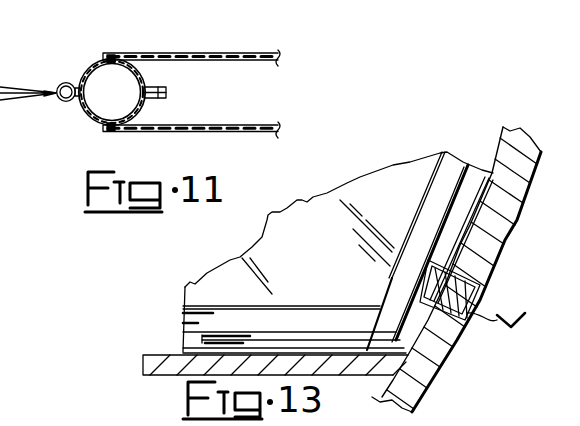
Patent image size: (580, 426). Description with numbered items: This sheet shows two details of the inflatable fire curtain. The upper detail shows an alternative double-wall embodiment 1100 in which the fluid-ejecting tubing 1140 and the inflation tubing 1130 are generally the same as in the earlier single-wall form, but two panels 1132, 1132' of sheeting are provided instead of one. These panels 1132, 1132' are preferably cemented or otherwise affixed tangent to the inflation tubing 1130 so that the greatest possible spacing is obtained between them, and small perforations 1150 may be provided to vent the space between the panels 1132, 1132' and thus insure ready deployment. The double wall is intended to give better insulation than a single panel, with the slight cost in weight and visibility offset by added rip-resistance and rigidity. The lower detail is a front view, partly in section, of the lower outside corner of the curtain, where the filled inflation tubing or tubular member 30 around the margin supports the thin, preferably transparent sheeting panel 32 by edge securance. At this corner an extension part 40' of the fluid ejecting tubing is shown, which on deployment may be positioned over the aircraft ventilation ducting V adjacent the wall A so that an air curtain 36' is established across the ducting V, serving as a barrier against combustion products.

In FIG. 11, the embodiment 1100 is at (121, 57).
In FIG. 11, the inflation tubing 1130 is at (93, 123).
In FIG. 11, the panel 1132 is at (190, 39).
In FIG. 11, the panel 1132' is at (190, 114).
In FIG. 11, the fluid-ejecting tubing 1140 is at (64, 82).
In FIG. 11, the perforations 1150 is at (252, 53).
In FIG. 13, the sheeting panel 32 is at (318, 279).
In FIG. 13, the inflation tubing 30 is at (294, 329).
In FIG. 13, the extension part 40' is at (399, 253).
In FIG. 13, the air curtain 36' is at (479, 248).
In FIG. 13, the wall A is at (505, 243).
In FIG. 13, the aircraft ventilation ducting V is at (496, 320).